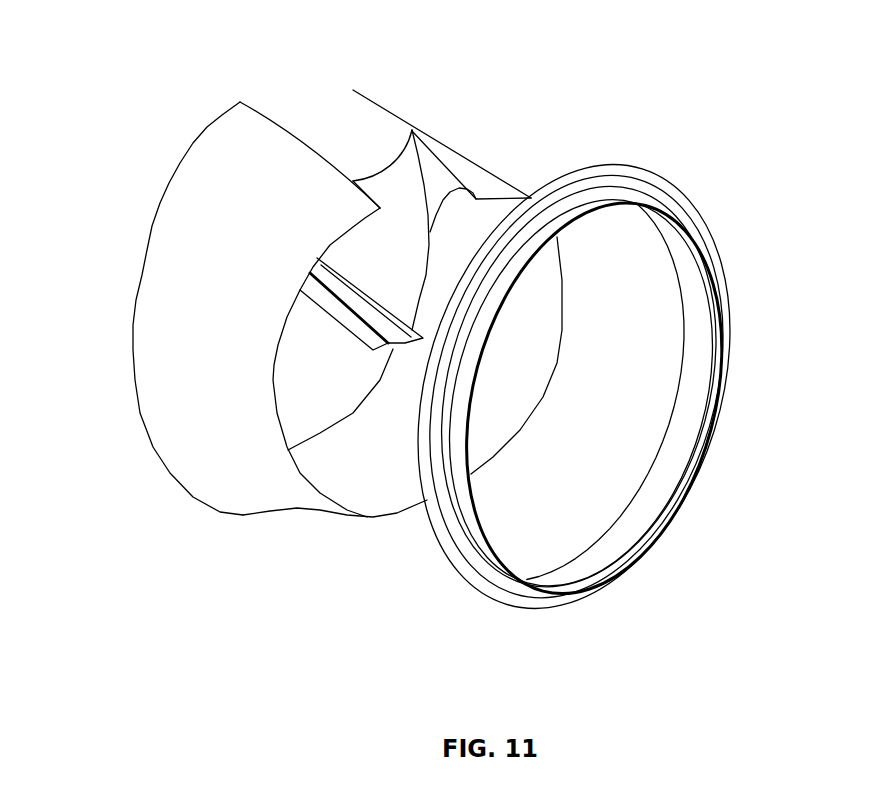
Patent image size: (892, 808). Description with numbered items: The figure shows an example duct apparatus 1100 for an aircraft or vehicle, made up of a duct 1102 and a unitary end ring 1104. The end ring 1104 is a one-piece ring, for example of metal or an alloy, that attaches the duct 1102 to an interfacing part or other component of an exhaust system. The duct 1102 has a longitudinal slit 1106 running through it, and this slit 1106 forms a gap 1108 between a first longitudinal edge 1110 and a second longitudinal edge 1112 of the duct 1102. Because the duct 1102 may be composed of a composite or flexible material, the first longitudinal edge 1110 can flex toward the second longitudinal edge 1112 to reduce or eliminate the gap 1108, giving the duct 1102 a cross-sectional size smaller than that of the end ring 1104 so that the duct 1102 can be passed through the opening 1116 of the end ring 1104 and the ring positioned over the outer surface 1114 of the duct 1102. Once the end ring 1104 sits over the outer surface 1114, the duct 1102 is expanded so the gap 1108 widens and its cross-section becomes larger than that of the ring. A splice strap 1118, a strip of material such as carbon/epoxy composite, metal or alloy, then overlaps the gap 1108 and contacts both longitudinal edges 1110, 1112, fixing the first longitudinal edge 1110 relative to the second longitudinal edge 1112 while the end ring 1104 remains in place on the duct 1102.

The duct apparatus 1100 is at (662, 84).
The duct 1102 is at (203, 130).
The unitary end ring 1104 is at (477, 593).
The longitudinal slit 1106 is at (370, 132).
The gap 1108 is at (354, 89).
The first longitudinal edge 1110 is at (413, 130).
The second longitudinal edge 1112 is at (430, 233).
The outer surface 1114 is at (162, 263).
The opening 1116 is at (652, 508).
The splice strap 1118 is at (313, 268).